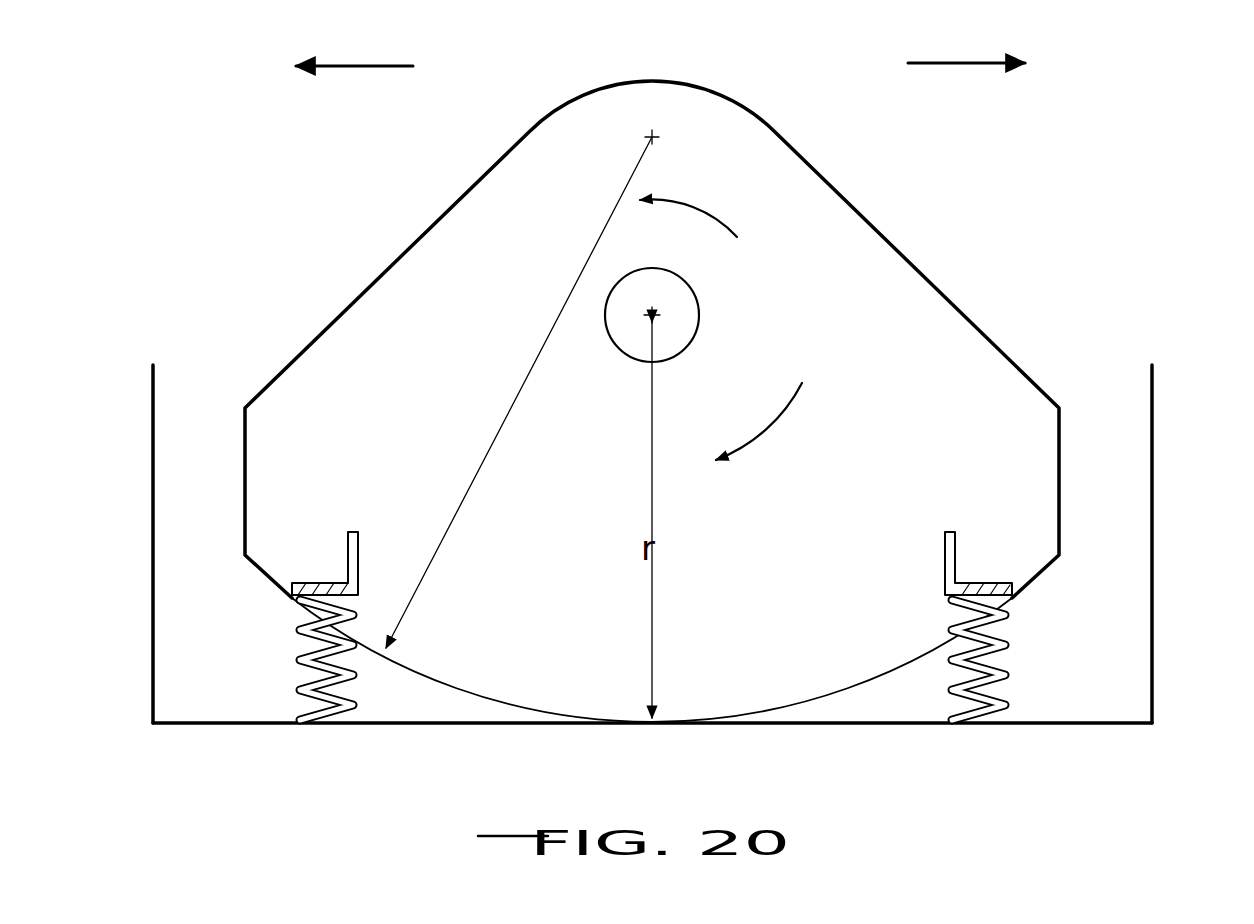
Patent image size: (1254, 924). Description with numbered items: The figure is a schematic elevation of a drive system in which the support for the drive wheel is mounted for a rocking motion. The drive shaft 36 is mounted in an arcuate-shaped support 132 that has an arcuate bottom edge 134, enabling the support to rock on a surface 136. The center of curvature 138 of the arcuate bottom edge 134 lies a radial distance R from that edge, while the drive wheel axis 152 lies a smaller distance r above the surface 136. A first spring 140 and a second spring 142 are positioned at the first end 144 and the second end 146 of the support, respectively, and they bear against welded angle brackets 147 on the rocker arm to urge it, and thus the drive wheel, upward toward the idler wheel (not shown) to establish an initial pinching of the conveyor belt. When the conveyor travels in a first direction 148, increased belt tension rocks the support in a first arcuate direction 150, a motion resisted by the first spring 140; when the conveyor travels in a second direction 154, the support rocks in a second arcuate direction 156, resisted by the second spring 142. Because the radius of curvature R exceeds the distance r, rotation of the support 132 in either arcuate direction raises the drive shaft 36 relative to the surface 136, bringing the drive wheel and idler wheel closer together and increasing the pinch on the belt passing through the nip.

The drive shaft 36 is at (699, 322).
The arcuate-shaped support 132 is at (332, 226).
The arcuate bottom edge 134 is at (437, 683).
The surface 136 is at (882, 708).
The center of curvature 138 is at (655, 134).
The first spring 140 is at (293, 658).
The second spring 142 is at (1012, 677).
The first end 144 is at (245, 492).
The second end 146 is at (1060, 483).
The welded angle brackets 147 is at (323, 583).
The first direction 148 is at (937, 63).
The first arcuate direction 150 is at (697, 205).
The drive wheel axis 152 is at (656, 314).
The second direction 154 is at (382, 52).
The second arcuate direction 156 is at (780, 415).